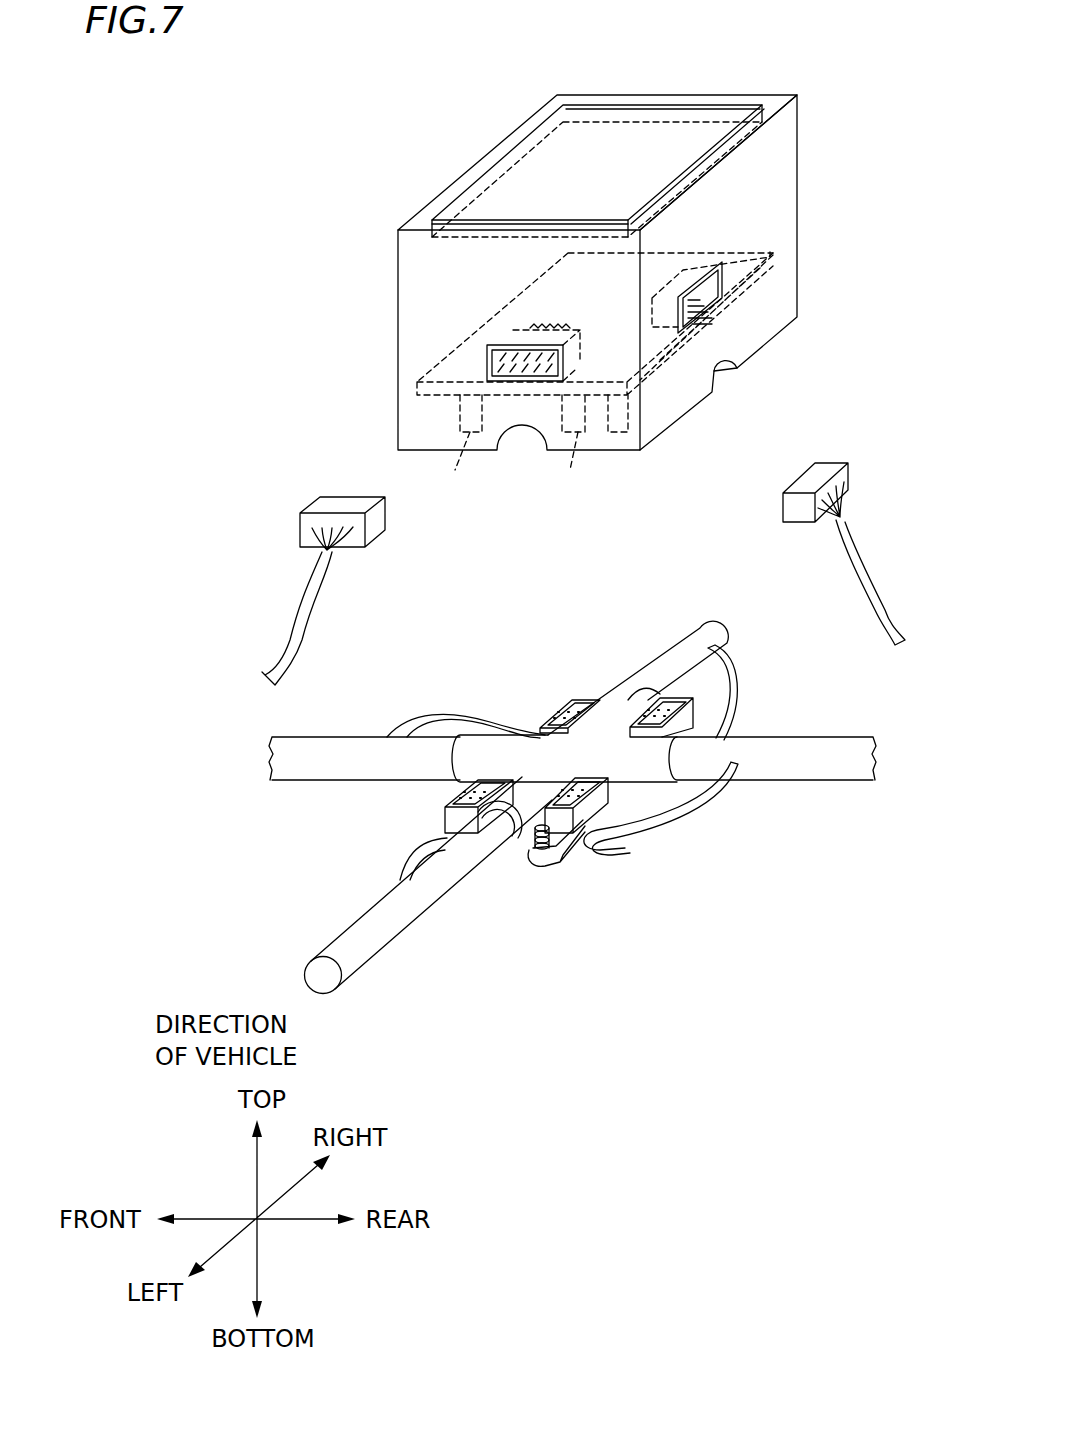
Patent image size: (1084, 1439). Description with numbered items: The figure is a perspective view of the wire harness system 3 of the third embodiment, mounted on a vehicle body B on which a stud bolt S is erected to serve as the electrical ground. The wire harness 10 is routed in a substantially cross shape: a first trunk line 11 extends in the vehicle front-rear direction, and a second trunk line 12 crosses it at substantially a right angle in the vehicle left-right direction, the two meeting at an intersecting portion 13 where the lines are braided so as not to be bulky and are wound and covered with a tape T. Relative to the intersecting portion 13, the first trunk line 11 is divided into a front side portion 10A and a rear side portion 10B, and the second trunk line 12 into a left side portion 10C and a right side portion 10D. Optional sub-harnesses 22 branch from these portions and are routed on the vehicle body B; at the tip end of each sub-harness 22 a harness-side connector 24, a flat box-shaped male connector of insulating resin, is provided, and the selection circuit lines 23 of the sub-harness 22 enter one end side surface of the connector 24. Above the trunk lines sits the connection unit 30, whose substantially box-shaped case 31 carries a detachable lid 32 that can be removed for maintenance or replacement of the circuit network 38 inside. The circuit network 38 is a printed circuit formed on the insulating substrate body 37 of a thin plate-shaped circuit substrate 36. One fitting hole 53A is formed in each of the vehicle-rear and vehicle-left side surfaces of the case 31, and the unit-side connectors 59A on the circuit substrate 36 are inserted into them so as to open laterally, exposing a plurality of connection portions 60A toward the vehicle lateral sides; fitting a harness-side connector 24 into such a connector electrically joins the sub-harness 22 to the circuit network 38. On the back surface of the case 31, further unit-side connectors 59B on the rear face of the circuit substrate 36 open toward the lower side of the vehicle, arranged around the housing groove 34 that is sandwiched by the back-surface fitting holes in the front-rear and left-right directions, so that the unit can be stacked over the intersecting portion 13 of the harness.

The wire harness system 3 is at (397, 88).
The wire harness 10 is at (416, 923).
The front side portion 10A is at (300, 745).
The rear side portion 10B is at (833, 735).
The left side portion 10C is at (482, 850).
The right side portion 10D is at (680, 650).
The first trunk line 11 is at (350, 745).
The second trunk line 12 is at (387, 943).
The intersecting portion 13 is at (558, 752).
The optional sub-harness 22 is at (295, 605).
The selection circuit lines 23 is at (302, 538).
The harness-side connector 24 is at (325, 502).
The connection unit 30 is at (596, 84).
The case 31 is at (655, 97).
The lid 32 is at (543, 135).
The housing groove 34 is at (742, 370).
The circuit substrate 36 is at (507, 298).
The substrate body 37 is at (490, 322).
The circuit network 38 is at (470, 346).
The fitting hole 53A is at (487, 357).
The unit-side connector 59A is at (493, 368).
The unit-side connector 59B is at (467, 470).
The connection portions 60A is at (500, 360).
The stud bolt S is at (552, 830).
The tape T is at (472, 742).
The vehicle body B is at (748, 907).